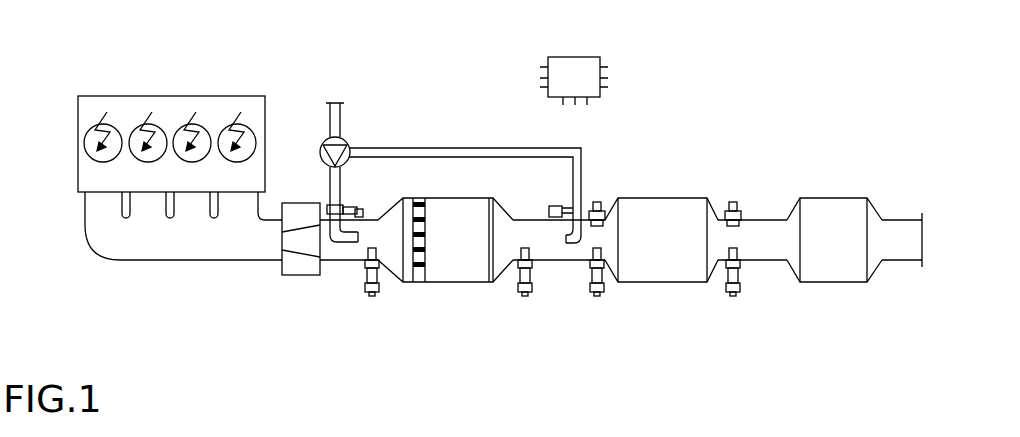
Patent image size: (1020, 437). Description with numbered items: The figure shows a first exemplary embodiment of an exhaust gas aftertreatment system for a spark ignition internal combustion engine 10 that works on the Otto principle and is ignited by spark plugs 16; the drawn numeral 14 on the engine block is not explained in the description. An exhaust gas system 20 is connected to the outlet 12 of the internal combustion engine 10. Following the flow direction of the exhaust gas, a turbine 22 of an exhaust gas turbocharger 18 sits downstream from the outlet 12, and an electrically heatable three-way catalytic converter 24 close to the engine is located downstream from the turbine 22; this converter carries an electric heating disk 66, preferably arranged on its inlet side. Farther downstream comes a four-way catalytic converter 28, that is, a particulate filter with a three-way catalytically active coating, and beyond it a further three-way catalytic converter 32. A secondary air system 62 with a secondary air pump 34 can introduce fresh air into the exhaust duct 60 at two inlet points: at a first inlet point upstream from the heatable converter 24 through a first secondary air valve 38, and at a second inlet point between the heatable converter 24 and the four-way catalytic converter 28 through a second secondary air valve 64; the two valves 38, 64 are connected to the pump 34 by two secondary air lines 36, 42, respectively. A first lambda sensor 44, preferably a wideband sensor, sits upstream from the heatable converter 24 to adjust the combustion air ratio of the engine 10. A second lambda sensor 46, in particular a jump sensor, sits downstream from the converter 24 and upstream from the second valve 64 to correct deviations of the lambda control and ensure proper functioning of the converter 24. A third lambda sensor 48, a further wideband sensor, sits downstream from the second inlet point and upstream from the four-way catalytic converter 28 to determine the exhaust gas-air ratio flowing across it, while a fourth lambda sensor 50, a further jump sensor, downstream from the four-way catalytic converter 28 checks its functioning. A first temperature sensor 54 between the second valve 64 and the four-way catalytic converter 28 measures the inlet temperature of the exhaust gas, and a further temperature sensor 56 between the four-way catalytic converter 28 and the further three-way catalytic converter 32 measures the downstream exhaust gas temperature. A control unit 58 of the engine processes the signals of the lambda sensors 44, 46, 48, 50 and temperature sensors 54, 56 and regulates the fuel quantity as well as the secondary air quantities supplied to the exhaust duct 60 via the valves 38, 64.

The internal combustion engine 10 is at (145, 152).
The outlet 12 is at (113, 234).
The exhaust manifold 14 is at (88, 179).
The spark plugs 16 is at (108, 134).
The exhaust gas turbocharger 18 is at (292, 275).
The exhaust gas system 20 is at (735, 112).
The turbine 22 is at (311, 267).
The electrically heatable three-way catalytic converter 24 is at (445, 273).
The four-way catalytic converter 28 is at (672, 269).
The further three-way catalytic converter 32 is at (846, 269).
The secondary air pump 34 is at (344, 143).
The secondary air line 36 is at (335, 186).
The first secondary air valve 38 is at (348, 208).
The secondary air line 42 is at (488, 153).
The first lambda sensor 44 is at (372, 288).
The second lambda sensor 46 is at (525, 288).
The third lambda sensor 48 is at (597, 288).
The fourth lambda sensor 50 is at (733, 288).
The first temperature sensor 54 is at (597, 210).
The further temperature sensor 56 is at (733, 210).
The control unit 58 is at (573, 57).
The exhaust duct 60 is at (773, 241).
The secondary air system 62 is at (403, 95).
The second secondary air valve 64 is at (561, 208).
The electric heating disk 66 is at (418, 269).